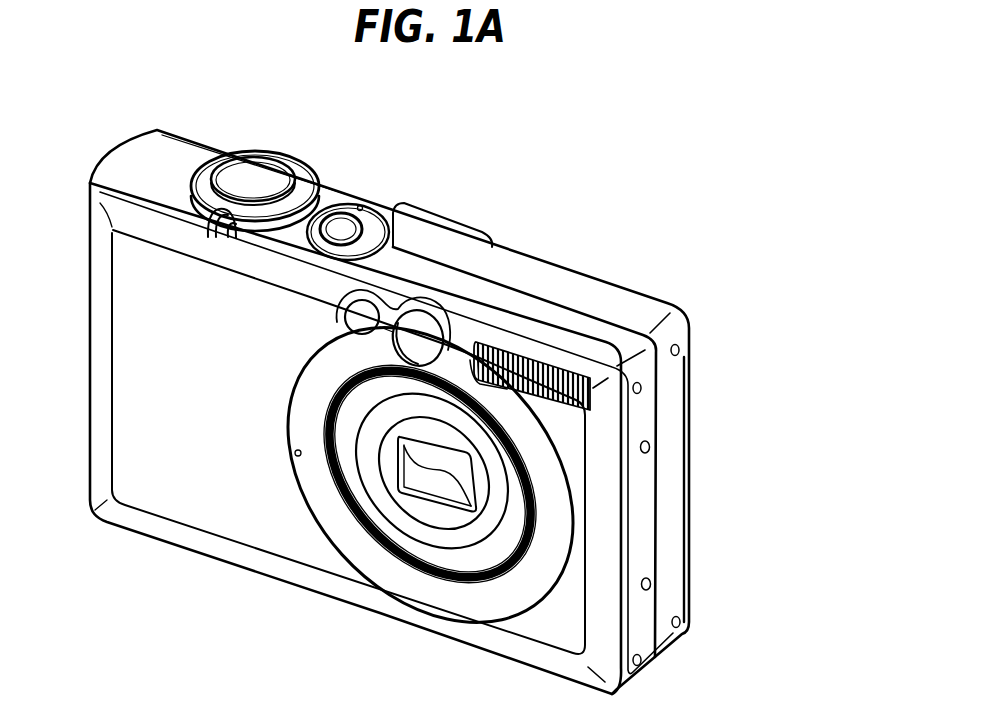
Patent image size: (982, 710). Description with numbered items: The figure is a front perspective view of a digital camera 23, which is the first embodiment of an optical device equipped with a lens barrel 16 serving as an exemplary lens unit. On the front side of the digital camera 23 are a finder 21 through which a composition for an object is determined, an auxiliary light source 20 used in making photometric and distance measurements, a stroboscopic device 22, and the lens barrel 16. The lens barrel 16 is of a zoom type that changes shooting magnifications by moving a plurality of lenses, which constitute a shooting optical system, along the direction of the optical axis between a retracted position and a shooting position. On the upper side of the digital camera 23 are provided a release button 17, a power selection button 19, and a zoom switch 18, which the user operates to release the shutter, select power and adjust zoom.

The lens barrel 16 is at (433, 535).
The release button 17 is at (258, 170).
The zoom switch 18 is at (307, 170).
The power selection button 19 is at (340, 222).
The auxiliary light source 20 is at (367, 312).
The finder 21 is at (418, 335).
The stroboscopic device 22 is at (533, 373).
The digital camera 23 is at (230, 520).